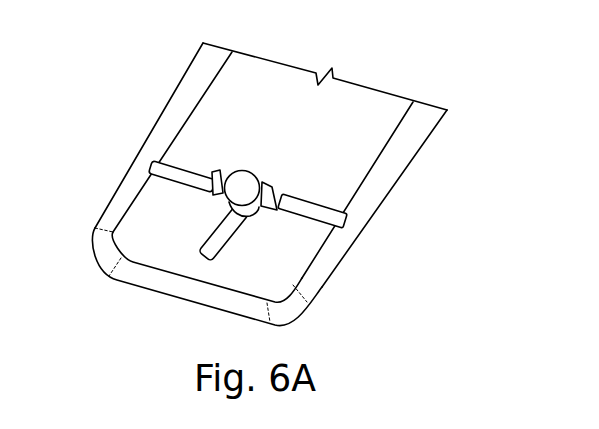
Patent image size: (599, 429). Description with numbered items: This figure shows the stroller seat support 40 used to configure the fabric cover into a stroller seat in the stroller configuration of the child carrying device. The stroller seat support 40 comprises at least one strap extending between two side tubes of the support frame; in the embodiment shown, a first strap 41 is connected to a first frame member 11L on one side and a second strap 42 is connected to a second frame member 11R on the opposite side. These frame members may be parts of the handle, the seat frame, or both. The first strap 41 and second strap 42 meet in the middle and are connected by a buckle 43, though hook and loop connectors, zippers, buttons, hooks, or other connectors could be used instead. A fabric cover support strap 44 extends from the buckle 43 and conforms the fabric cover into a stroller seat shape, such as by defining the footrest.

The first frame member 11L is at (170, 135).
The second frame member 11R is at (338, 238).
The stroller seat support 40 is at (291, 177).
The first strap 41 is at (175, 172).
The second strap 42 is at (313, 207).
The buckle 43 is at (241, 180).
The fabric cover support strap 44 is at (218, 243).